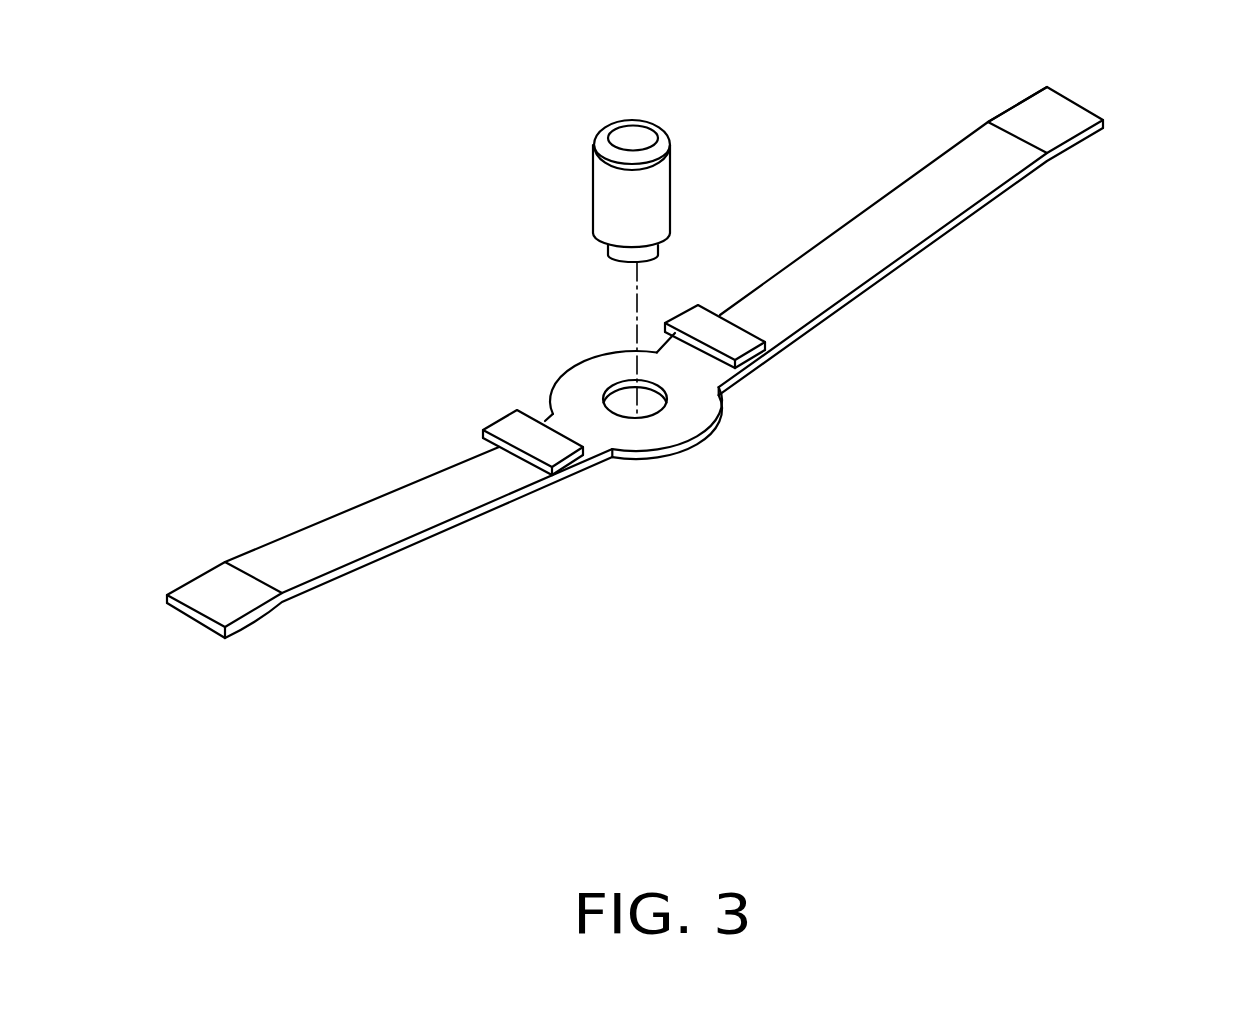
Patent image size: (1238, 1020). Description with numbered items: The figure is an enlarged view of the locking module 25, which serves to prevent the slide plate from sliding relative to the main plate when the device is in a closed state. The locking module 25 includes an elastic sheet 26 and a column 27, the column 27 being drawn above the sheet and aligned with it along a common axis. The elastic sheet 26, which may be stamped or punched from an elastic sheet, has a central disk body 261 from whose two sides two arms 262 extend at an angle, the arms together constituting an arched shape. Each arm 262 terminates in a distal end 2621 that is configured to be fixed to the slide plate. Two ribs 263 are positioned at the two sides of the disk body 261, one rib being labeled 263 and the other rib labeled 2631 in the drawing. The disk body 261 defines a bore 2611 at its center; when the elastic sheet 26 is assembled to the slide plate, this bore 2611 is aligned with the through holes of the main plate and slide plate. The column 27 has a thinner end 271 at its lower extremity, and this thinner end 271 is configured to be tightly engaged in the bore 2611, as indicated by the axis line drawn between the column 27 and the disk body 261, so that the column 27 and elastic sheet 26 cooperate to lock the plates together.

The locking module 25 is at (447, 187).
The elastic sheet 26 is at (560, 358).
The disk body 261 is at (643, 437).
The bore 2611 is at (650, 405).
The arm 262 is at (850, 256).
The distal end 2621 is at (1063, 123).
The rib 263 is at (735, 338).
The second arm with positioning block 2631 is at (520, 432).
The column 27 is at (617, 207).
The thinner end 271 is at (651, 251).